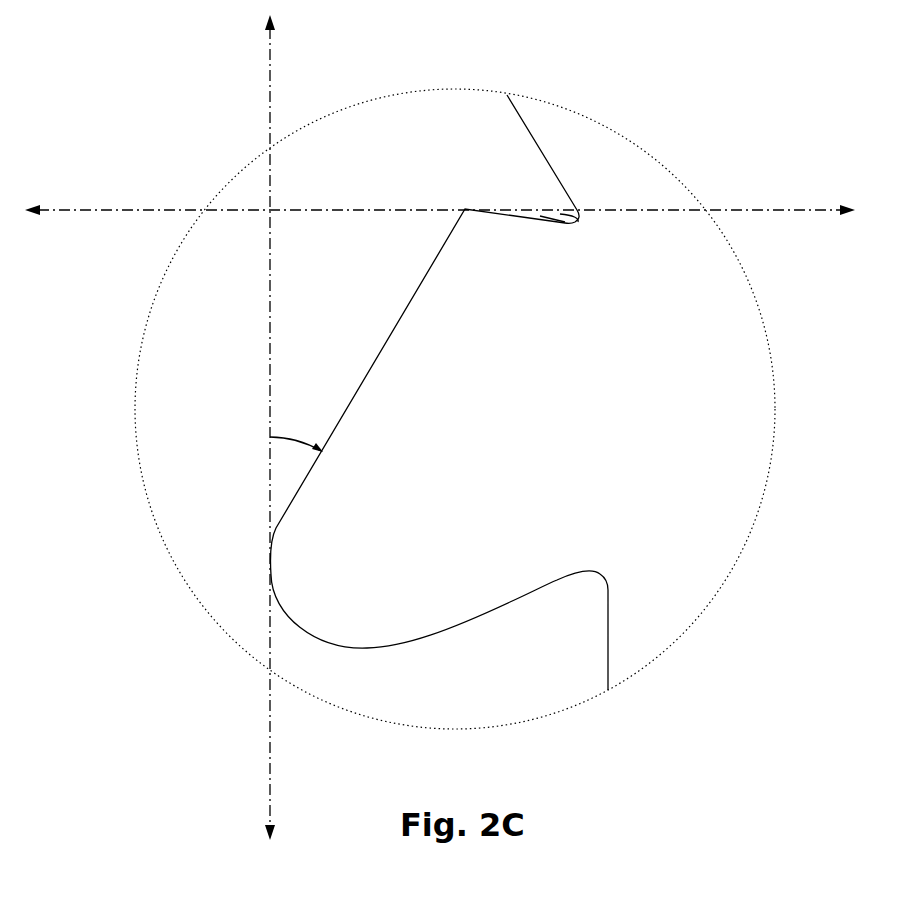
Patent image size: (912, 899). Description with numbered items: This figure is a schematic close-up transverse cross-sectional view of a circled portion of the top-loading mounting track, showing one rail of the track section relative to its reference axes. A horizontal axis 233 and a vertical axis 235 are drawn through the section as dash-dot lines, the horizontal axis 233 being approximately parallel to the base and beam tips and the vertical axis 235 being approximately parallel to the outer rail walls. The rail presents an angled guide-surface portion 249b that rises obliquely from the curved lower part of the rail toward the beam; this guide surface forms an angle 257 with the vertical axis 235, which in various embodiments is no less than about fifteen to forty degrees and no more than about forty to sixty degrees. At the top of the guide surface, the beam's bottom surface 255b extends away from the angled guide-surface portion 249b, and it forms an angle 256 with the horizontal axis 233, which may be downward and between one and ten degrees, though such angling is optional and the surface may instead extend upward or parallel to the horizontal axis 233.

The horizontal axis 233 is at (124, 209).
The vertical axis 235 is at (268, 754).
The angled guide-surface portion 249b is at (358, 392).
The bottom surface 255b is at (521, 218).
The angle 256 is at (550, 216).
The angle 257 is at (299, 437).